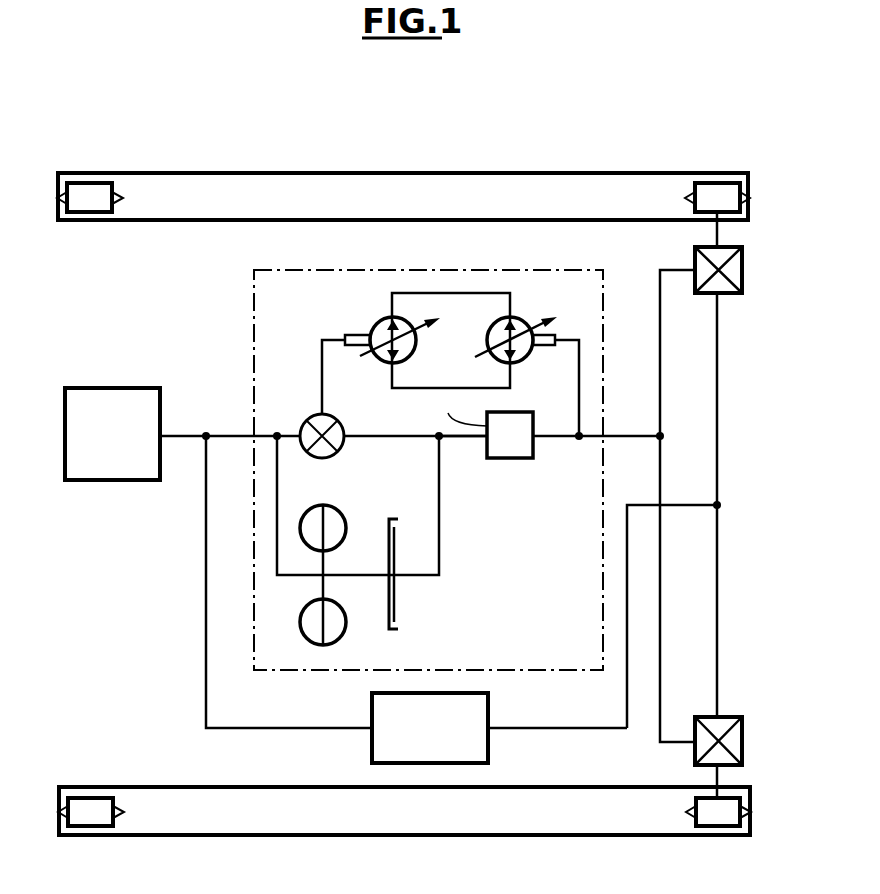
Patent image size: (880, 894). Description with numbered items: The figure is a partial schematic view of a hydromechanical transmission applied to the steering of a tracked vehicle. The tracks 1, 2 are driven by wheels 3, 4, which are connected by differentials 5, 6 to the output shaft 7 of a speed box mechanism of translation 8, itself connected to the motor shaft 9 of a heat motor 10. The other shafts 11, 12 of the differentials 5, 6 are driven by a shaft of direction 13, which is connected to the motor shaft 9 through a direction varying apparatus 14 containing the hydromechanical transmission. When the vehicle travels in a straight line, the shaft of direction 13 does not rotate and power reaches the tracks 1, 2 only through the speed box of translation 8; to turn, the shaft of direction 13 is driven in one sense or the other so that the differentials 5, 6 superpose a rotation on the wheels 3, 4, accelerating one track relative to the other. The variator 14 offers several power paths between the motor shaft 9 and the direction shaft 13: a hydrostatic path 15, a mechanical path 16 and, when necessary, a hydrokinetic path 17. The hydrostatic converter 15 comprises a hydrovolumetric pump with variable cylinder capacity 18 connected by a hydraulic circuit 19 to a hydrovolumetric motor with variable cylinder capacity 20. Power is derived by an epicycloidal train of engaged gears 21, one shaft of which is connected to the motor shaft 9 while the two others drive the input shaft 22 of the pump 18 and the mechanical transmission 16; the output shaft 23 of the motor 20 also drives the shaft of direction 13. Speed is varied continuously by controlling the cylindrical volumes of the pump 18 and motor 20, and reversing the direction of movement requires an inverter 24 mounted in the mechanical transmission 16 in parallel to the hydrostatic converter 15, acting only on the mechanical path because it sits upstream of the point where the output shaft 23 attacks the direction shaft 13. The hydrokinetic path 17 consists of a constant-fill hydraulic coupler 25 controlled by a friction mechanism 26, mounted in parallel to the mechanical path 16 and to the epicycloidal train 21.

The track 1 is at (435, 818).
The track 2 is at (408, 185).
The wheel 3 is at (96, 812).
The wheel 4 is at (88, 195).
The differential 5 is at (745, 742).
The differential 6 is at (745, 270).
The output shaft 7 is at (691, 505).
The speed box mechanism of translation 8 is at (461, 722).
The motor shaft 9 is at (186, 432).
The heat motor 10 is at (108, 400).
The shaft of differential 11 is at (660, 738).
The shaft of differential 12 is at (660, 282).
The shaft of direction 13 is at (631, 432).
The direction varying apparatus 14 is at (248, 313).
The hydrostatic converter 15 is at (431, 311).
The mechanical transmission 16 is at (378, 432).
The hydrokinetic path 17 is at (277, 506).
The hydrovolumetric pump with variable cylinder capacity 18 is at (384, 318).
The hydraulic circuit 19 is at (456, 293).
The hydrovolumetric motor with variable cylinder capacity 20 is at (516, 318).
The epicycloidal train of engaged gears 21 is at (308, 421).
The input shaft 22 is at (322, 367).
The output shaft 23 is at (582, 385).
The inverter 24 is at (508, 446).
The hydraulic coupler 25 is at (333, 628).
The friction mechanism 26 is at (400, 615).